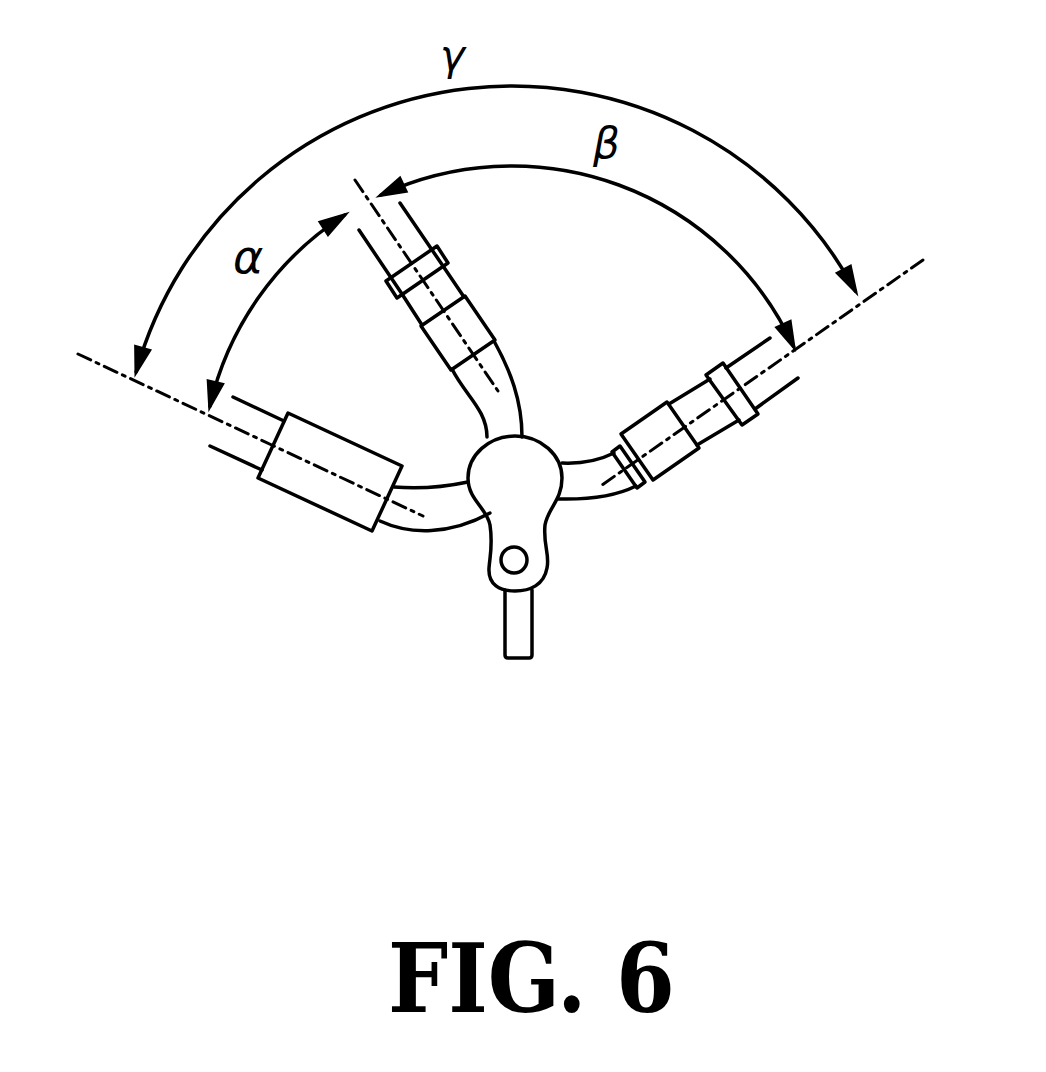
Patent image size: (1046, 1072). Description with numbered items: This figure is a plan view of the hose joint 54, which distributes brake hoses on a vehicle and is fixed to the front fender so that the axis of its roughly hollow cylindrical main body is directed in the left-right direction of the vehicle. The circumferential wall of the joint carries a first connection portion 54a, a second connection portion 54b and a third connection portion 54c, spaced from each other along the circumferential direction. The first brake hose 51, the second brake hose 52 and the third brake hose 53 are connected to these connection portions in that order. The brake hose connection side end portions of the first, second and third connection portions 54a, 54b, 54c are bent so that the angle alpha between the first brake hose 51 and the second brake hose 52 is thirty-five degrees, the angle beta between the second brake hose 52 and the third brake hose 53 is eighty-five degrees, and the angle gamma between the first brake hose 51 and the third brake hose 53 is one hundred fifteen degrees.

The first brake hose 51 is at (212, 447).
The second brake hose 52 is at (426, 230).
The third brake hose 53 is at (785, 383).
The hose joint 54 is at (558, 533).
The first connection portion 54a is at (435, 533).
The second connection portion 54b is at (520, 400).
The third connection portion 54c is at (630, 490).